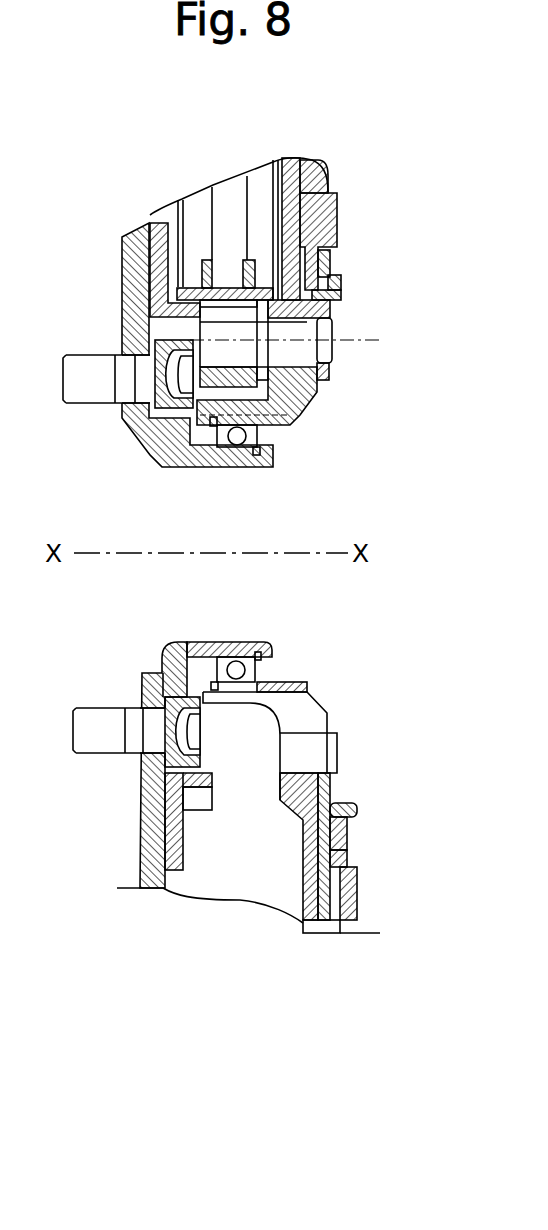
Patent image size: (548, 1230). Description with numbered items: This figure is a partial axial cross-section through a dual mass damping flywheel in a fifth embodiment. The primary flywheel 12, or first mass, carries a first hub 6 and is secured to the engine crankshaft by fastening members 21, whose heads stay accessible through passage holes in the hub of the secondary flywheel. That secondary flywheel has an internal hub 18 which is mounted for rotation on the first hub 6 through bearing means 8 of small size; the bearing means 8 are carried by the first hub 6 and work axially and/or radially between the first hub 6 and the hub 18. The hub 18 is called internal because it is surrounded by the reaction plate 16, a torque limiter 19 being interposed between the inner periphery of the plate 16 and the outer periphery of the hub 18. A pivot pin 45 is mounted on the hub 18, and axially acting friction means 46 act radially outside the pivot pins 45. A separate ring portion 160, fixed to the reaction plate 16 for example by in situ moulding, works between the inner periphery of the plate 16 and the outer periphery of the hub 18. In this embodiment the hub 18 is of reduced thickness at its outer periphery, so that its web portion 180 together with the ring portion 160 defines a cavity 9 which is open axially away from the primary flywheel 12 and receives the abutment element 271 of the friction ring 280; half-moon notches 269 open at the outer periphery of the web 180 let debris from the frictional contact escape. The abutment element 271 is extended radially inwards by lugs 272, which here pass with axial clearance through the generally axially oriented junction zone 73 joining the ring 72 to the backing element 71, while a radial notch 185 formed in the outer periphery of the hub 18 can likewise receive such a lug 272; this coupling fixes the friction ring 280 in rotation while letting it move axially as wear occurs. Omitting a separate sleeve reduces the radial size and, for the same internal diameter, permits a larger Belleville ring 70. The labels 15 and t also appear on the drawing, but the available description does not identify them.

The first hub 6 is at (150, 452).
The bearing means 8 is at (263, 669).
The cavity 9 is at (342, 300).
The primary flywheel 12 is at (135, 859).
The housing section 15 is at (190, 232).
The reaction plate 16 is at (290, 157).
The internal hub 18 is at (305, 405).
The torque limiter 19 is at (340, 251).
The fastening members 21 is at (84, 354).
The pivot pin 45 is at (334, 352).
The axially acting friction means 46 is at (188, 884).
The Belleville ring 70 is at (331, 265).
The backing element 71 is at (342, 284).
The ring 72 is at (329, 377).
The junction zone 73 is at (350, 802).
The ring portion 160 is at (330, 922).
The web portion 180 is at (283, 230).
The radial notch 185 is at (348, 827).
The notches 269 is at (283, 193).
The abutment element 271 is at (347, 851).
The connecting lug 272 is at (343, 787).
The friction ring 280 is at (358, 894).
The thickness t is at (330, 169).